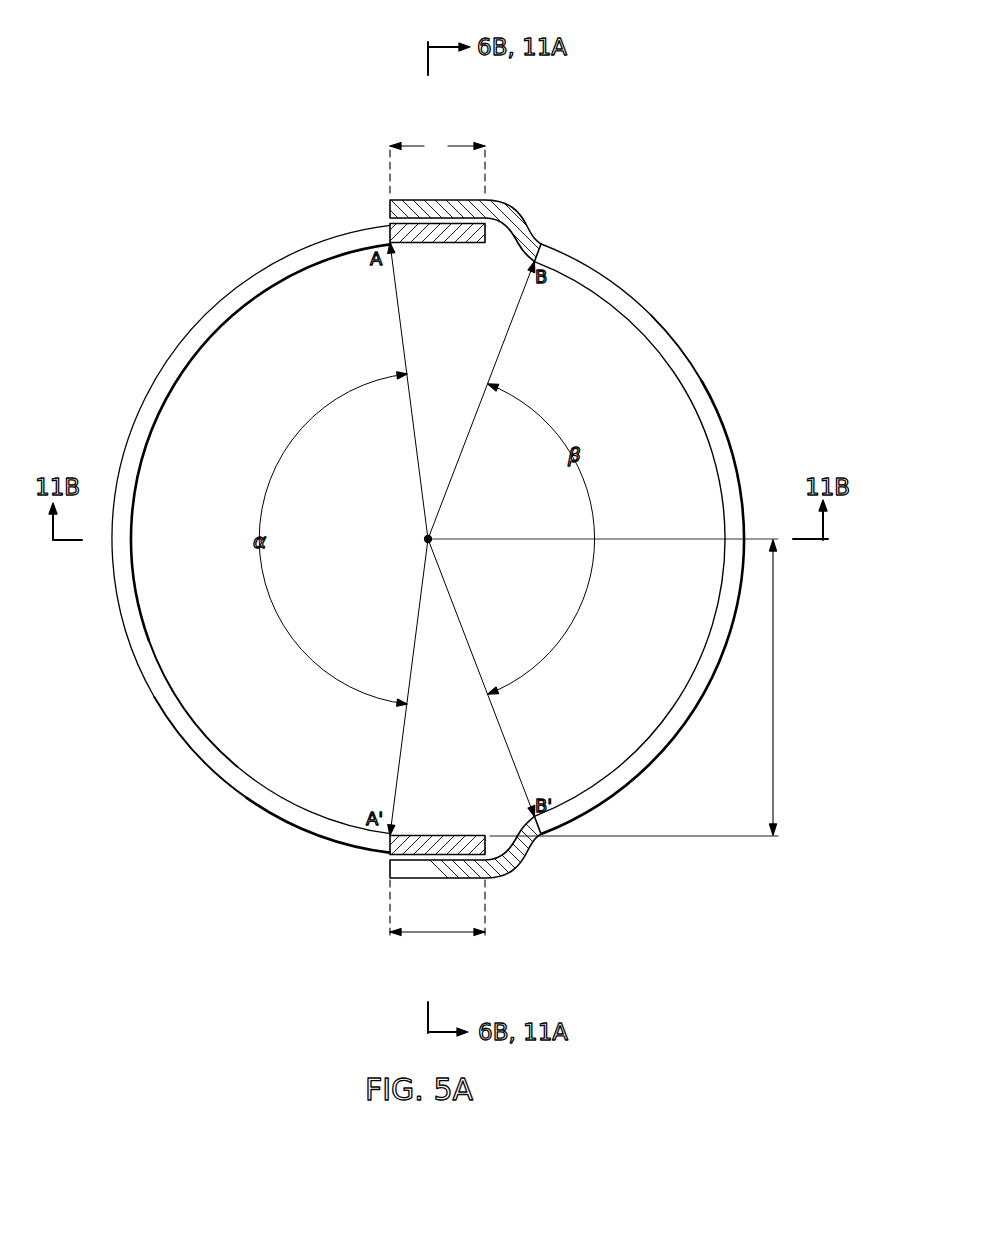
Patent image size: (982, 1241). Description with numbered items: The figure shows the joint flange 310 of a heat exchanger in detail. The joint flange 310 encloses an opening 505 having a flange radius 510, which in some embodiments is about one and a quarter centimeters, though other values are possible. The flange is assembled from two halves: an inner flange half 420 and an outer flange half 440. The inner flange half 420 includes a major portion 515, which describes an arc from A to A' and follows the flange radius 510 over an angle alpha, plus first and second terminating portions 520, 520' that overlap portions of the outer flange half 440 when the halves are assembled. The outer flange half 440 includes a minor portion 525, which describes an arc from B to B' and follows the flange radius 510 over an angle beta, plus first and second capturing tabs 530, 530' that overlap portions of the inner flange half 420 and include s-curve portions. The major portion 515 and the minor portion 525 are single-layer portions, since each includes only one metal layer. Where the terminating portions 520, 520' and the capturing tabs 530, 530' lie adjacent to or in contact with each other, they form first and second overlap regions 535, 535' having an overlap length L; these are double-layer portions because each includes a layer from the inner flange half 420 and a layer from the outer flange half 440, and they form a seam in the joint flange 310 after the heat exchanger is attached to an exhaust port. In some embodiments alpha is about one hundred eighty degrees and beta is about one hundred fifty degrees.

The joint flange 310 is at (428, 496).
The inner flange half 420 is at (221, 300).
The outer flange half 440 is at (637, 298).
The major portion 515 is at (168, 356).
The minor portion 525 is at (712, 345).
The first terminating portion 520 is at (410, 225).
The first capturing tab 530 is at (481, 235).
The second terminating portion 520' is at (410, 851).
The second capturing tab 530' is at (481, 845).
The first overlap region 535 is at (436, 147).
The second overlap region 535' is at (437, 931).
The opening 505 is at (366, 552).
The flange radius 510 is at (773, 688).